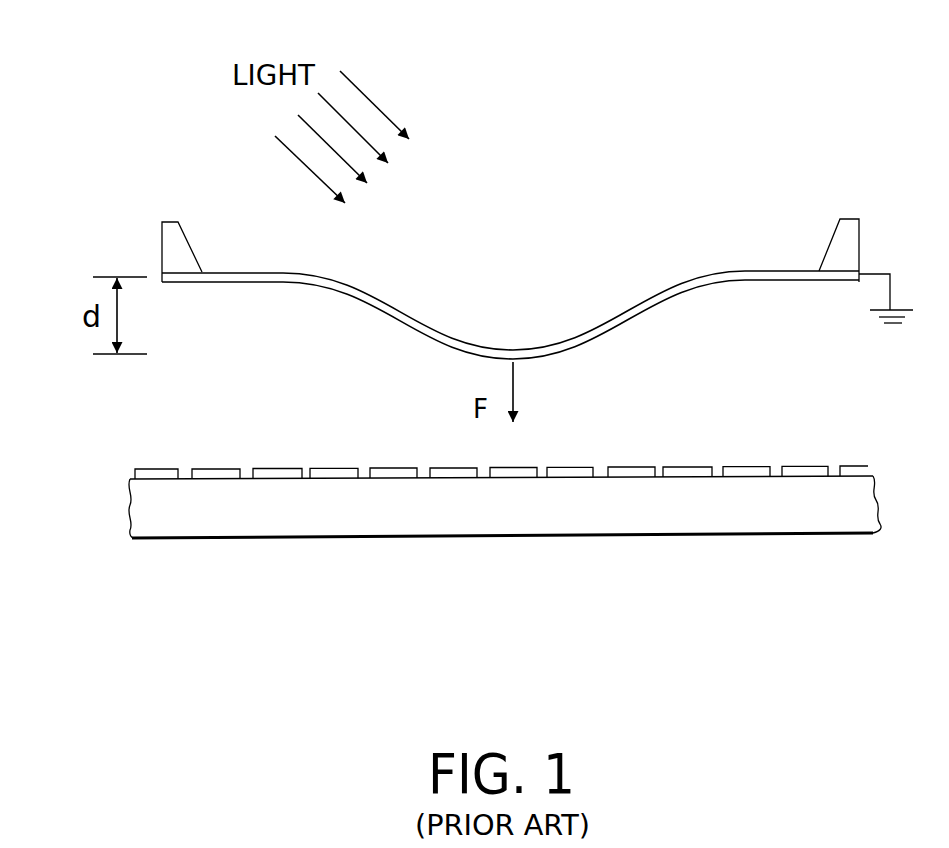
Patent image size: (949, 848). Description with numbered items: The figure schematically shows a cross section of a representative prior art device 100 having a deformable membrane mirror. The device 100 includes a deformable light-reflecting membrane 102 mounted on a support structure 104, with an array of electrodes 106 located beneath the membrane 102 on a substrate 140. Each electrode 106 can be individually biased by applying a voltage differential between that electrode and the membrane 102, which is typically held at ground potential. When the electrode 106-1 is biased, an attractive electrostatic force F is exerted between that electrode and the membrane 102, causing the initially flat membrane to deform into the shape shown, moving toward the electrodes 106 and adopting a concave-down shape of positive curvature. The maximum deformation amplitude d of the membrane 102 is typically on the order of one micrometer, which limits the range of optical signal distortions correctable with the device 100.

The device 100 is at (80, 621).
The deformable light-reflecting membrane 102 is at (660, 290).
The support structure 104 is at (178, 222).
The electrodes 106 is at (697, 466).
The electrode 106-1 is at (513, 467).
The substrate 140 is at (710, 535).